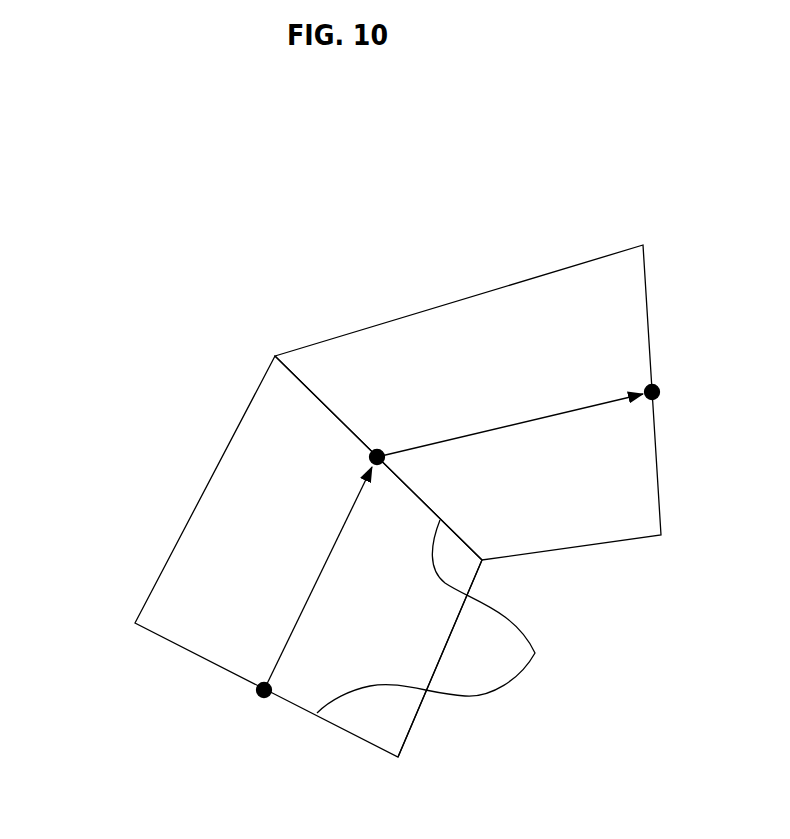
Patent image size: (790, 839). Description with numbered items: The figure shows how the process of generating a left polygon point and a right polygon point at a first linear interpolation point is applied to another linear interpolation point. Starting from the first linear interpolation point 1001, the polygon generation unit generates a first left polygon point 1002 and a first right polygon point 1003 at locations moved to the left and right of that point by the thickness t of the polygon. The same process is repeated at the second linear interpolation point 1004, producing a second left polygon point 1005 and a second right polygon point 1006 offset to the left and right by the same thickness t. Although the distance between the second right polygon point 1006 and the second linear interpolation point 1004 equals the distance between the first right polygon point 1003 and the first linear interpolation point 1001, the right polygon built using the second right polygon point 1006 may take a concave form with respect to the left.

The linear interpolation point (1) 1001 is at (262, 697).
The left polygon point (1) 1002 is at (135, 623).
The right polygon point (1) 1003 is at (398, 757).
The linear interpolation point (2) 1004 is at (375, 452).
The left polygon point (2) 1005 is at (275, 356).
The right polygon point (2) 1006 is at (482, 560).
The thickness of a polygon t is at (433, 616).